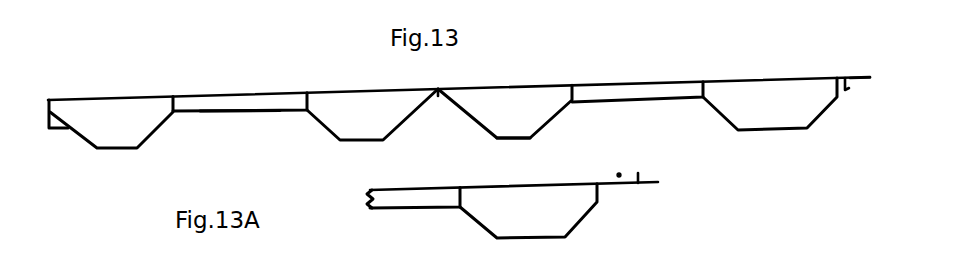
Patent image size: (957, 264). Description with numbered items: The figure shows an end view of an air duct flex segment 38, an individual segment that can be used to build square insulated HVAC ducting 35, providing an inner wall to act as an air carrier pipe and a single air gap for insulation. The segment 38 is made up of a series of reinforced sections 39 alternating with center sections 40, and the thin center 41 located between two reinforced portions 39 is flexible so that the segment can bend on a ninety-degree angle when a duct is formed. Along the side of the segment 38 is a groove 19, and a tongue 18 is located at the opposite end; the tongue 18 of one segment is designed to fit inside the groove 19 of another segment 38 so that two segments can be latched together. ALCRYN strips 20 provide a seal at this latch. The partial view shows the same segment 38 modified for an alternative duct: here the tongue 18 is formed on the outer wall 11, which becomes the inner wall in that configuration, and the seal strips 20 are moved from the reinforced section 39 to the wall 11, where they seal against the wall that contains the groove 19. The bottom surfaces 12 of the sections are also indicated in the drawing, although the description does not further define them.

In FIG. 13, the outer wall 11 is at (216, 97).
In FIG. 13A, the outer wall 11 is at (580, 183).
In FIG. 13, the bottom surface 12 is at (230, 113).
In FIG. 13, the tongue 18 is at (860, 82).
In FIG. 13A, the tongue 18 is at (619, 175).
In FIG. 13, the groove 19 is at (47, 112).
In FIG. 13, the ALCRYN strips 20 is at (847, 93).
In FIG. 13A, the ALCRYN strips 20 is at (650, 177).
In FIG. 13A, the square insulated HVAC ducting 35 is at (756, 256).
In FIG. 13, the air duct flex segment 38 is at (713, 25).
In FIG. 13, the reinforced sections 39 is at (121, 108).
In FIG. 13A, the reinforced sections 39 is at (528, 197).
In FIG. 13, the center sections 40 is at (250, 97).
In FIG. 13A, the center sections 40 is at (430, 197).
In FIG. 13, the center 41 is at (440, 92).